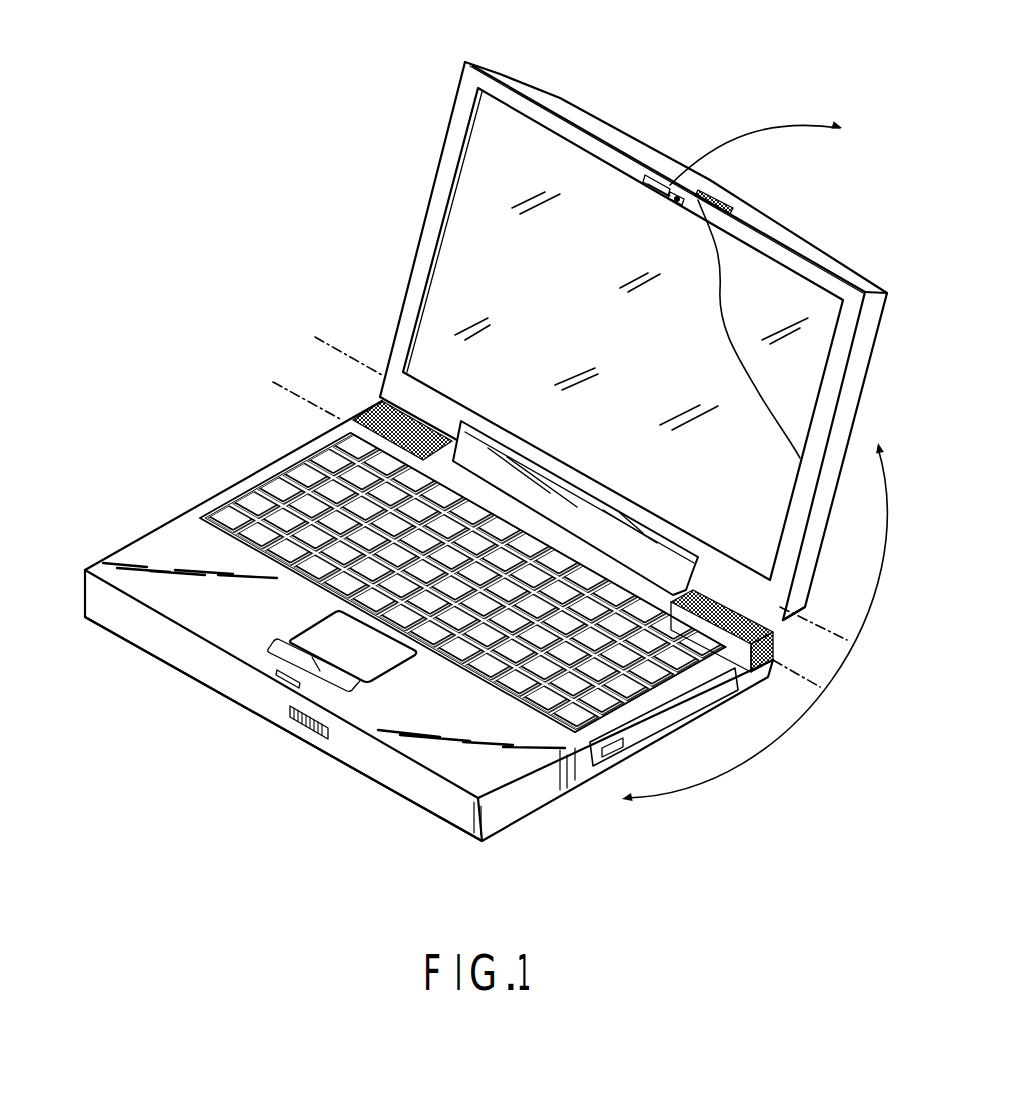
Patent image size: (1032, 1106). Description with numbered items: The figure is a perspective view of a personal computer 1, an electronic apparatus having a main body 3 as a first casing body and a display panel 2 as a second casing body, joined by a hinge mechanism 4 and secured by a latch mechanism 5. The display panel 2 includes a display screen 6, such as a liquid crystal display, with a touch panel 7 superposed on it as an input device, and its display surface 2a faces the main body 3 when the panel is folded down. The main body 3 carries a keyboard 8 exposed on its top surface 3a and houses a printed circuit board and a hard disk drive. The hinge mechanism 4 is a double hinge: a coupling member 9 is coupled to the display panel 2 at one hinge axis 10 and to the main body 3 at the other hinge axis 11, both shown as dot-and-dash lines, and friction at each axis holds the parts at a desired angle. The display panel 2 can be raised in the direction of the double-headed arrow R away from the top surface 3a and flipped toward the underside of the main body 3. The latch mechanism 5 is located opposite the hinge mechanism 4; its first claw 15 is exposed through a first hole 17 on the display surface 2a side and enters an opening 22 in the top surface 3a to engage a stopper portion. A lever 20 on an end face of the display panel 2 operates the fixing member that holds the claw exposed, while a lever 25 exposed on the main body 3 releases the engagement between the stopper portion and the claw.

The personal computer 1 is at (328, 185).
The display panel 2 is at (507, 82).
The display surface 2a is at (833, 284).
The main body 3 is at (92, 597).
The top surface 3a is at (168, 543).
The hinge mechanism 4 is at (494, 400).
The latch mechanism 5 is at (675, 135).
The display screen 6 is at (785, 378).
The touch panel 7 is at (470, 200).
The keyboard 8 is at (555, 707).
The coupling member 9 is at (553, 490).
The hinge axis 10 is at (343, 352).
The hinge axis 11 is at (296, 392).
The first claw 15 is at (674, 205).
The first hole 17 is at (648, 192).
The lever 20 is at (722, 195).
The opening 22 is at (277, 678).
The lever 25 is at (293, 722).
The double-headed arrow R is at (778, 122).